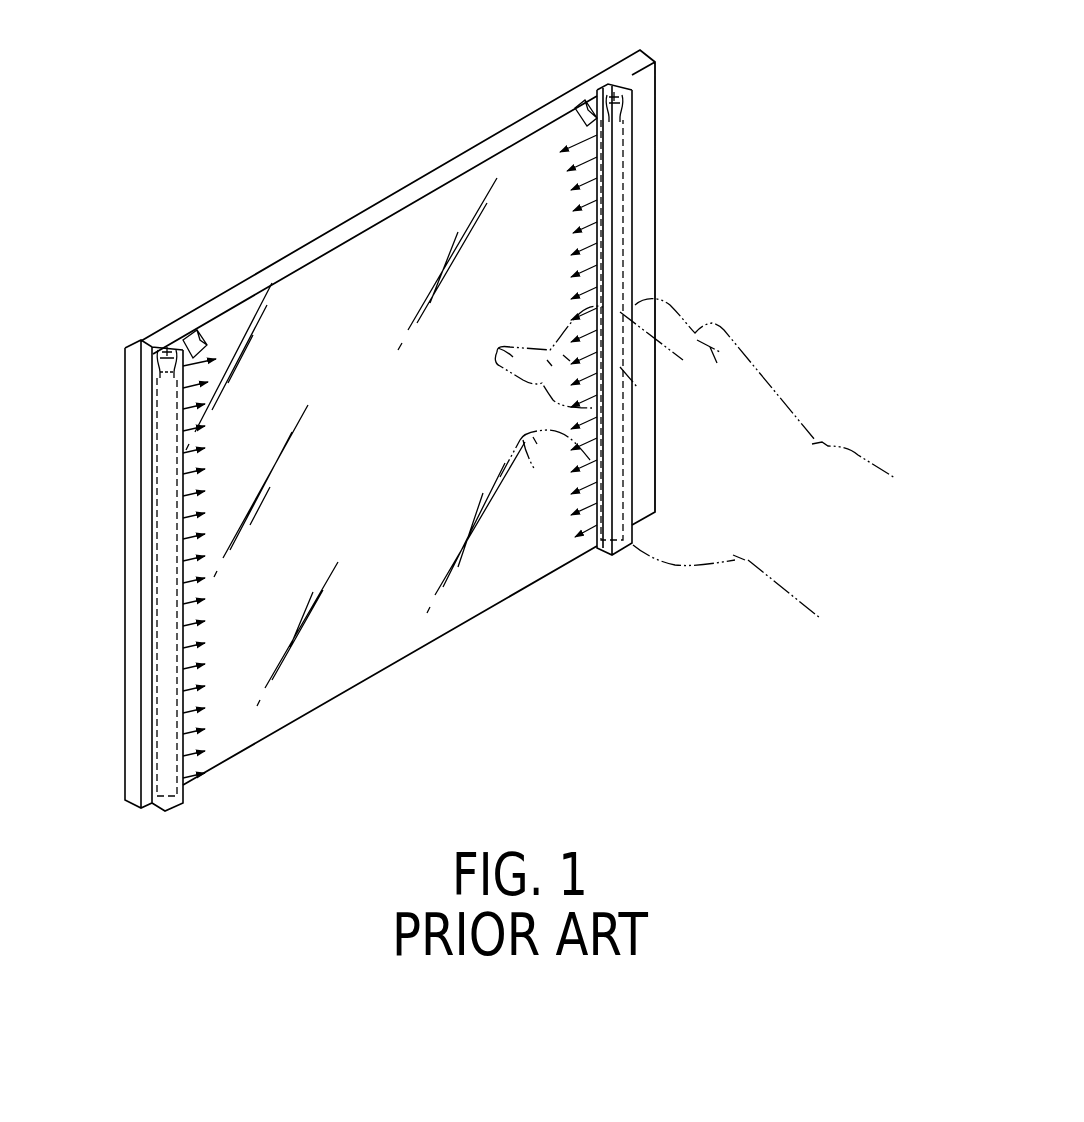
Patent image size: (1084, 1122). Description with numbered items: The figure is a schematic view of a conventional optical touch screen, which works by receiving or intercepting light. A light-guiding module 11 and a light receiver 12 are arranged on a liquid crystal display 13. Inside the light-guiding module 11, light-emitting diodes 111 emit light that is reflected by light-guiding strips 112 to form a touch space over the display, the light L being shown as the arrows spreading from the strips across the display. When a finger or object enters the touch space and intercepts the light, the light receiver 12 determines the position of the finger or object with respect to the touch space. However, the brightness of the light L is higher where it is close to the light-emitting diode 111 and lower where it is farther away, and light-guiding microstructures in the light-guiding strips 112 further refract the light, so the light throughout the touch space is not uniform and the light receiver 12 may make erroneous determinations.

The light-guiding module 11 is at (150, 410).
The light-emitting diode 111 is at (160, 350).
The light-guiding strip 112 is at (160, 554).
The light receiver 12 is at (192, 343).
The liquid crystal display 13 is at (445, 175).
The light L is at (188, 478).